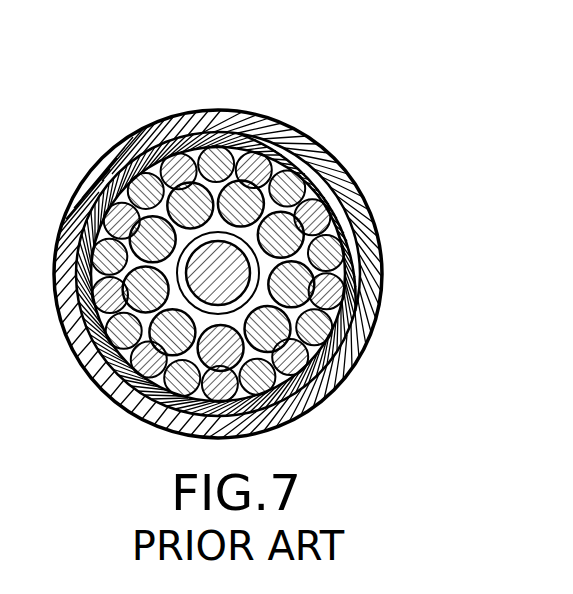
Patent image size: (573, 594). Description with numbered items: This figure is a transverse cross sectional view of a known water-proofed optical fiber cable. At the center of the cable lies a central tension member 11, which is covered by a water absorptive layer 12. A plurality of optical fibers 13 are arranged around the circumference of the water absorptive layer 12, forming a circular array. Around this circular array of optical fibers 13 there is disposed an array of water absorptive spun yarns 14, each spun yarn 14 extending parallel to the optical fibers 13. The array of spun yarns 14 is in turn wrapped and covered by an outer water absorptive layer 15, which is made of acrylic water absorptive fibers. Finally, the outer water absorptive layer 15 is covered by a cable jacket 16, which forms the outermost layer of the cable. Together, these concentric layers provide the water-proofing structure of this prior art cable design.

The central tension member 11 is at (210, 268).
The water absorptive layer 12 is at (148, 372).
The optical fibers 13 is at (153, 232).
The water absorptive spun yarns 14 is at (312, 165).
The outer water absorptive layer 15 is at (336, 293).
The cable jacket 16 is at (318, 388).